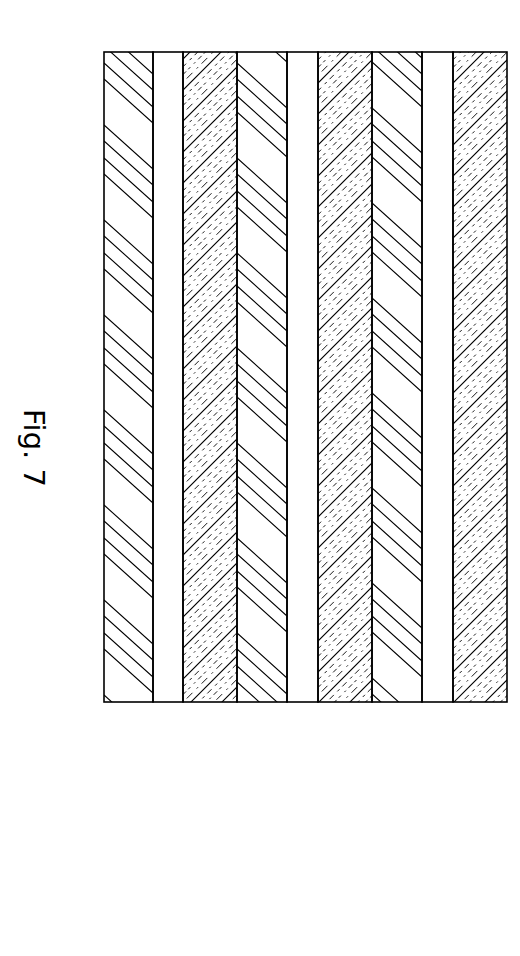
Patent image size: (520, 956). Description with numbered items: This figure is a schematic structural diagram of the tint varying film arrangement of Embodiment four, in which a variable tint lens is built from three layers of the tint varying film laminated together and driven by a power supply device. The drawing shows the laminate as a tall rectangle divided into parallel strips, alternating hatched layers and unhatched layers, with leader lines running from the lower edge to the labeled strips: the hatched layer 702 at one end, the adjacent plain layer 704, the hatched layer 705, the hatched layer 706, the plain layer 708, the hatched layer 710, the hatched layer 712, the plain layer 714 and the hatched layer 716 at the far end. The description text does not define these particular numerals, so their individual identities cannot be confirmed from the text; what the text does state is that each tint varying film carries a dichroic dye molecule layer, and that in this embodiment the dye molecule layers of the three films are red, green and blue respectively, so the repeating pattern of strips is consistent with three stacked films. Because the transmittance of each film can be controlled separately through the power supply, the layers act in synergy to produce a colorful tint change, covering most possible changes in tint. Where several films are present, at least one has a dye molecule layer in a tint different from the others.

The first layer 702 is at (122, 685).
The second layer 704 is at (162, 682).
The third layer 705 is at (212, 692).
The fourth layer 706 is at (270, 675).
The fifth layer 708 is at (302, 690).
The sixth layer 710 is at (352, 678).
The seventh layer 712 is at (403, 680).
The eighth layer 714 is at (438, 685).
The ninth layer 716 is at (490, 678).